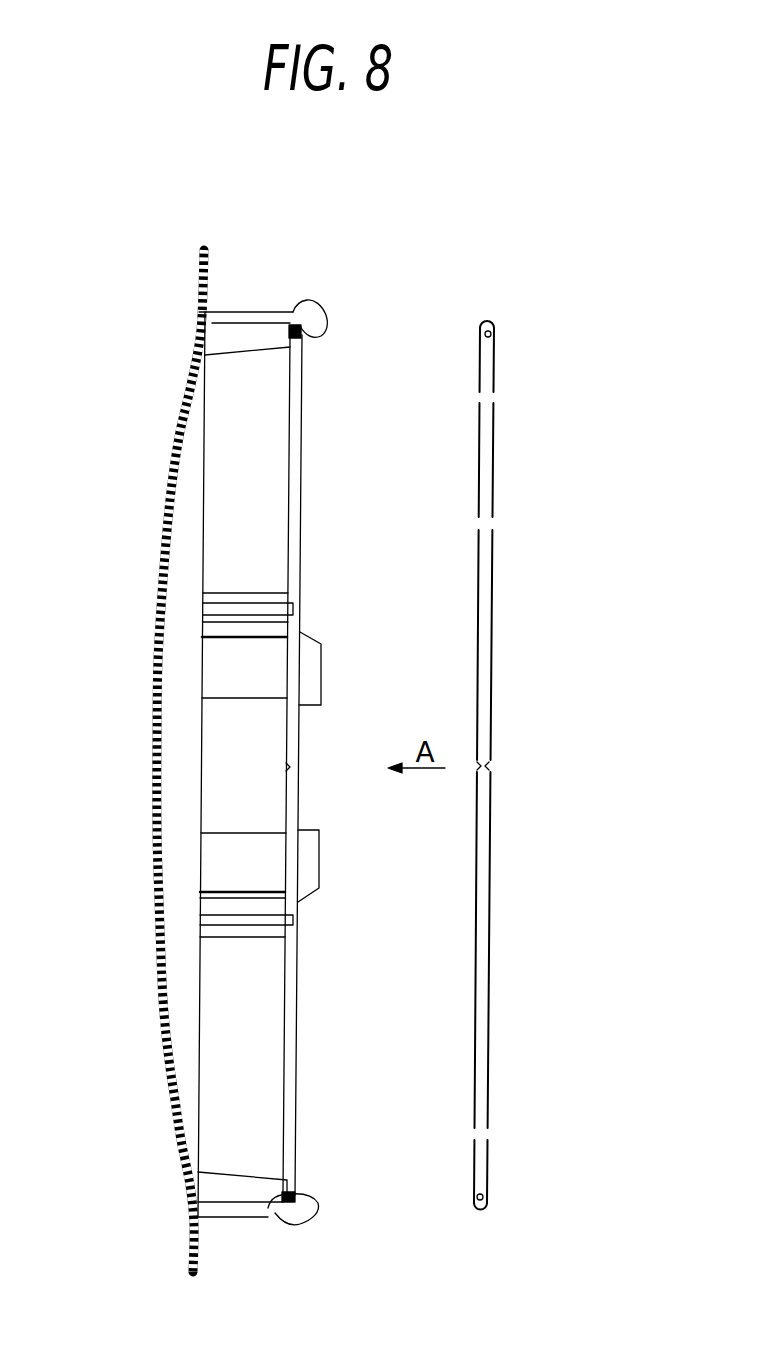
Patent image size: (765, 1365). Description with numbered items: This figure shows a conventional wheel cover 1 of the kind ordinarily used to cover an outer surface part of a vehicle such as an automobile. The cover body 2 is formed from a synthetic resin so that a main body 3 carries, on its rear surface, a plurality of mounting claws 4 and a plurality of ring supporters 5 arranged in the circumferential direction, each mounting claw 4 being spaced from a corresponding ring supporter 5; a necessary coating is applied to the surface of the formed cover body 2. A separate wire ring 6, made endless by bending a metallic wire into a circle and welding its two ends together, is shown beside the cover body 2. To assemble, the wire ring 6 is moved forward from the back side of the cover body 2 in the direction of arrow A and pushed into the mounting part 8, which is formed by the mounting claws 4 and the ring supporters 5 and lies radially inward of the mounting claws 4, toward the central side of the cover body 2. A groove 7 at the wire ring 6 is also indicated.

The wheel cover 1 is at (180, 373).
The cover body 2 is at (199, 311).
The main body 3 is at (156, 720).
The mounting claw 4 is at (320, 335).
The ring supporter 5 is at (253, 354).
The wire ring 6 is at (298, 722).
The groove 7 is at (291, 768).
The mounting part 8 is at (279, 328).